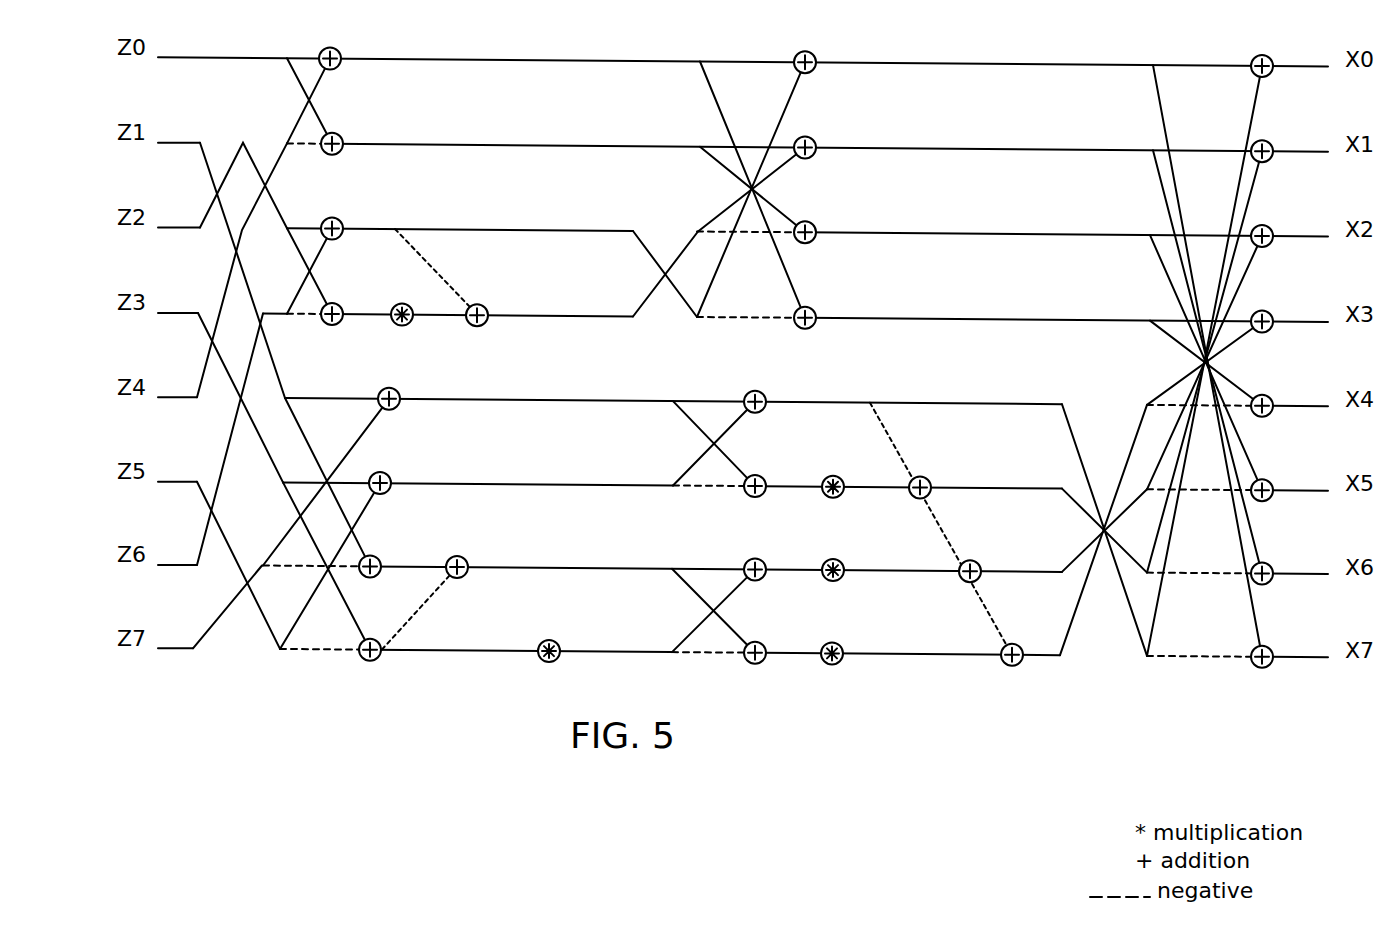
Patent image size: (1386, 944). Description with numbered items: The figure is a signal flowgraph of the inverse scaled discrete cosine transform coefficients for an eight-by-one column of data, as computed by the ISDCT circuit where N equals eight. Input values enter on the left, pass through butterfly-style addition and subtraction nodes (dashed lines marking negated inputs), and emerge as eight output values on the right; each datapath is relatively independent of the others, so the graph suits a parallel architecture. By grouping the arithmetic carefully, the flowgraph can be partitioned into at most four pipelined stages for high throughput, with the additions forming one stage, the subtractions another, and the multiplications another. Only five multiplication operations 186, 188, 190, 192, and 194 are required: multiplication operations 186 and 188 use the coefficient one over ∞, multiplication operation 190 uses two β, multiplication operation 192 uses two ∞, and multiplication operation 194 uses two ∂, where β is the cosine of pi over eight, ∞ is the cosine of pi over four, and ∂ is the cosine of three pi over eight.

The multiplication operation 186 is at (412, 341).
The multiplication operation 188 is at (557, 641).
The multiplication operation 190 is at (842, 477).
The multiplication operation 192 is at (842, 561).
The multiplication operation 194 is at (841, 646).